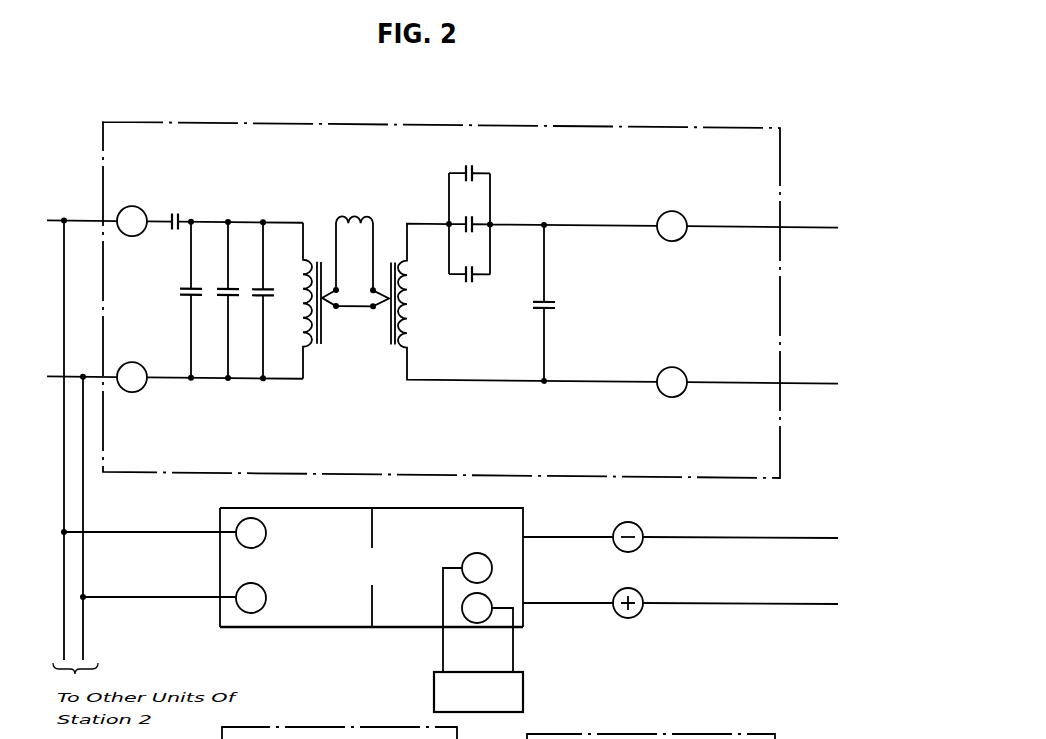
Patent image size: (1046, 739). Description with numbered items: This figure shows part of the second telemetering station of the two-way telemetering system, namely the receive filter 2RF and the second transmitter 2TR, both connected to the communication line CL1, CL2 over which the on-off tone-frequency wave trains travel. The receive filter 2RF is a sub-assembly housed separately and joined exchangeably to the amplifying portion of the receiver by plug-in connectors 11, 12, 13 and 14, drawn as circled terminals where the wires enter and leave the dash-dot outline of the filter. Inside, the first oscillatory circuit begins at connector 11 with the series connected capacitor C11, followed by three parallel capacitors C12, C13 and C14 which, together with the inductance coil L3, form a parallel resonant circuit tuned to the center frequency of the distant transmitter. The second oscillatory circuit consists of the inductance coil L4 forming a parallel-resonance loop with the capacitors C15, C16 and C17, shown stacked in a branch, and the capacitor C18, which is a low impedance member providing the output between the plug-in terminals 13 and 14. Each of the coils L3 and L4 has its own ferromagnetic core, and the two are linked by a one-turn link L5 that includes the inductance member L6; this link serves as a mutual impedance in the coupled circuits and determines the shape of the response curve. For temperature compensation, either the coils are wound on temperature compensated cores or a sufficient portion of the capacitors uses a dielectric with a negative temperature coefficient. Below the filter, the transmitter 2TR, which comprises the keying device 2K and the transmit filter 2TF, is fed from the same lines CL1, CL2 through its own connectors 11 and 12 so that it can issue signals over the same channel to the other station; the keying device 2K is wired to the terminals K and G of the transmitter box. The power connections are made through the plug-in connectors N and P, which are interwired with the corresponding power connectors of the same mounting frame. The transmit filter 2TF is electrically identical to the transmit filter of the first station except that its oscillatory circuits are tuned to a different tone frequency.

The receive filter 2RF is at (425, 120).
The communication line CL1 is at (87, 208).
The communication line CL2 is at (90, 370).
The plug-in connector 11 is at (191, 377).
The plug-in connector 12 is at (191, 487).
The plug-in terminal 13 is at (747, 227).
The plug-in terminal 14 is at (747, 383).
The series connected capacitor C11 is at (176, 212).
The parallel capacitor C12 is at (185, 290).
The parallel capacitor C13 is at (222, 292).
The parallel capacitor C14 is at (259, 291).
The capacitor C15 is at (468, 167).
The capacitor C16 is at (470, 210).
The capacitor C17 is at (470, 258).
The capacitor C18 is at (552, 303).
The inductance coil L3 is at (303, 337).
The inductance coil L4 is at (403, 336).
The one-turn link L5 is at (352, 311).
The inductance member L6 is at (354, 241).
The transmit filter 2TF is at (290, 517).
The transmitter 2TR is at (380, 577).
The key terminal K is at (467, 612).
The ground terminal G is at (487, 632).
The keying device 2K is at (478, 692).
The plug-in connector N is at (641, 528).
The plug-in connector P is at (650, 585).